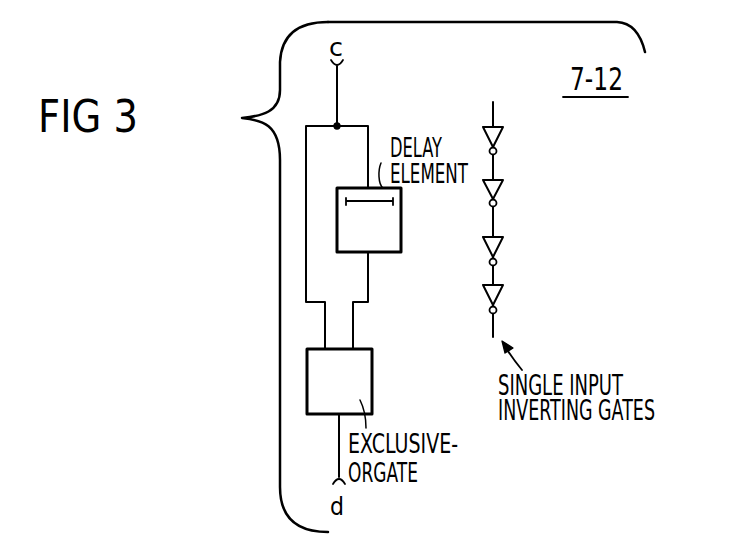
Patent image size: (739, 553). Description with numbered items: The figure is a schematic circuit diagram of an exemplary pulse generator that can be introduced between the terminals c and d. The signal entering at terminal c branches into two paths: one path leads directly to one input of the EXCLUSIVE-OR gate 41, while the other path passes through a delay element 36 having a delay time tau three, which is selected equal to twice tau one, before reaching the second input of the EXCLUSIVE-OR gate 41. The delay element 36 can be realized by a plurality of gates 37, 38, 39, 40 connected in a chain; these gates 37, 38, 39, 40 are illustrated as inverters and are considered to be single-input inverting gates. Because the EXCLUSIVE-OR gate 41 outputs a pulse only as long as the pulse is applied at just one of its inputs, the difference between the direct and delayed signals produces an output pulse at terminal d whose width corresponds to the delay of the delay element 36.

The delay element 36 is at (401, 229).
The gate 37 is at (510, 138).
The gate 38 is at (511, 189).
The gate 39 is at (512, 247).
The gate 40 is at (514, 297).
The EXCLUSIVE-OR gate 41 is at (372, 372).